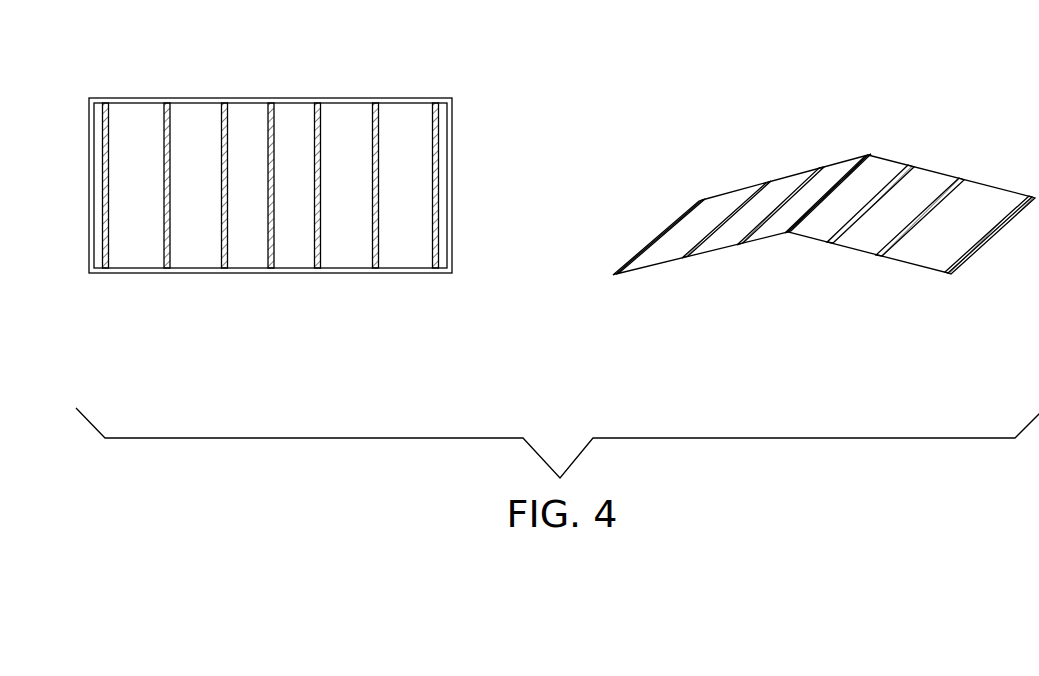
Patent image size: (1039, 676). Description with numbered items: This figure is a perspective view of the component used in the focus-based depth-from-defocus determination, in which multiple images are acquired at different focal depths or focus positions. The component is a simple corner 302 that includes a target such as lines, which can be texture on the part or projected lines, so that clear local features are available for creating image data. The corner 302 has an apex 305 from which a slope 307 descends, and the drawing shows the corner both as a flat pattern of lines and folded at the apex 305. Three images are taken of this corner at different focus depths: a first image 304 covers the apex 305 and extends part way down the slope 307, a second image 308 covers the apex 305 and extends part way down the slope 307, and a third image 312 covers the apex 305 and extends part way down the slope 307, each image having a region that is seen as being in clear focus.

The corner 302 is at (272, 99).
The first image 304 is at (223, 279).
The apex 305 is at (870, 155).
The slope 307 is at (807, 173).
The second image 308 is at (166, 309).
The third image 312 is at (105, 346).